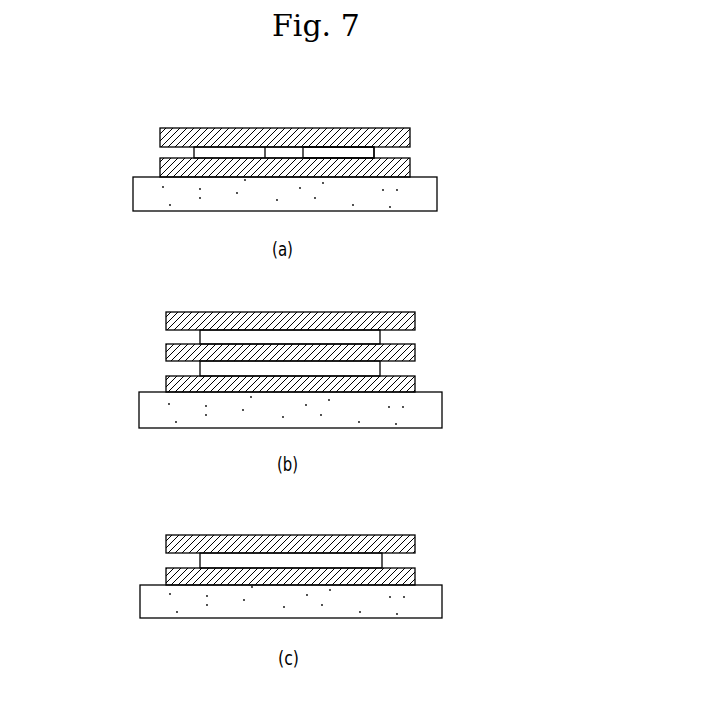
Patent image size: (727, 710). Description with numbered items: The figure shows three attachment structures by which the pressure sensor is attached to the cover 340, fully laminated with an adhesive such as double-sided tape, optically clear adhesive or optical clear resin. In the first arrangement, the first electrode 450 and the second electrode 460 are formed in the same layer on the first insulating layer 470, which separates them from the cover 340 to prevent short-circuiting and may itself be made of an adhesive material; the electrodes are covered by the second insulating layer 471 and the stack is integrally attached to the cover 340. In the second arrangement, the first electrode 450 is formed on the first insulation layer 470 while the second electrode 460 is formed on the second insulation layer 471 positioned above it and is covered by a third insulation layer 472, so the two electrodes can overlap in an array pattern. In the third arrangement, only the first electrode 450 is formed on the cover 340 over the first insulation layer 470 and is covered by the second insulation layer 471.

The cover 340 is at (437, 190).
The first electrode 450 is at (194, 152).
The second electrode 460 is at (374, 152).
The first insulating layer 470 is at (410, 165).
The second insulating layer 471 is at (390, 127).
The third insulation layer 472 is at (415, 319).